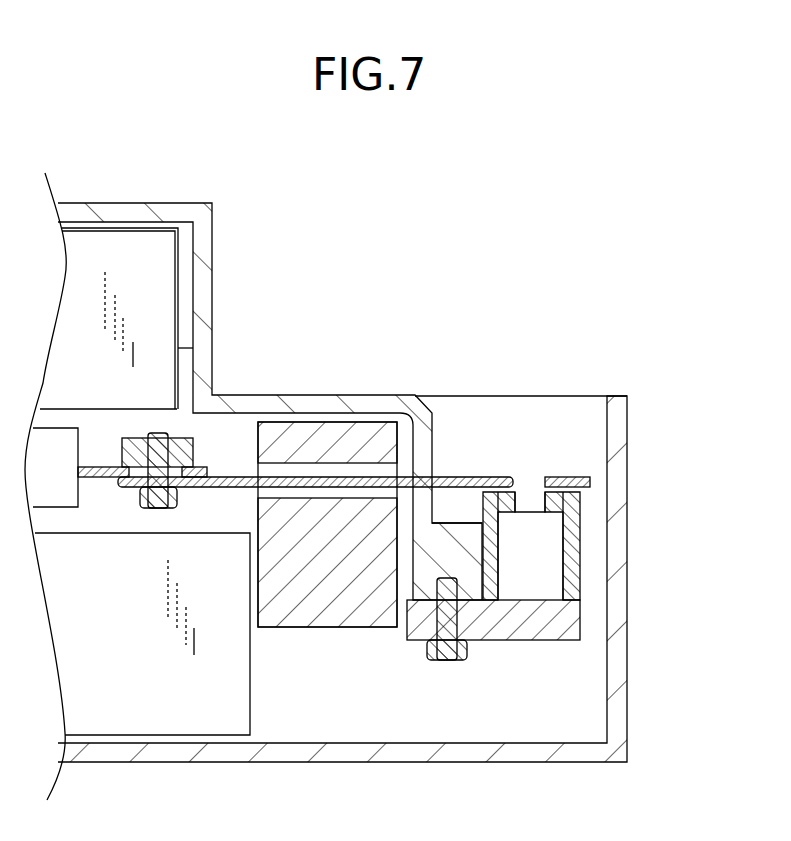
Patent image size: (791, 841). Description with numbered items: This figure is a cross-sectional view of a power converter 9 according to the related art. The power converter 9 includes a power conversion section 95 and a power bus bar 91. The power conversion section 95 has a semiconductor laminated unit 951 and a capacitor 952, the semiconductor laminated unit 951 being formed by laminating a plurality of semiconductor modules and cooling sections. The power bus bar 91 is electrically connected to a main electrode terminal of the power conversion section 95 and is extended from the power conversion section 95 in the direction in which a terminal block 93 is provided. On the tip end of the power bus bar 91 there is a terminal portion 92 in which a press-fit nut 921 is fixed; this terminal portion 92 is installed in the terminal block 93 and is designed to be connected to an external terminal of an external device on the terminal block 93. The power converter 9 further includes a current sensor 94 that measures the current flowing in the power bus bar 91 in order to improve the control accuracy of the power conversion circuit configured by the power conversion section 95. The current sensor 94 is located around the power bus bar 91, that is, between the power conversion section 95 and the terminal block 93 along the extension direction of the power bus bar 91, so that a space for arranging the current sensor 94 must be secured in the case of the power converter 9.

The power converter 9 is at (595, 225).
The power bus bar 91 is at (229, 468).
The terminal portion 92 is at (572, 477).
The press-fit nut 921 is at (523, 477).
The terminal block 93 is at (563, 618).
The current sensor 94 is at (333, 612).
The power conversion section 95 is at (178, 347).
The semiconductor laminated unit 951 is at (153, 272).
The capacitor 952 is at (148, 683).